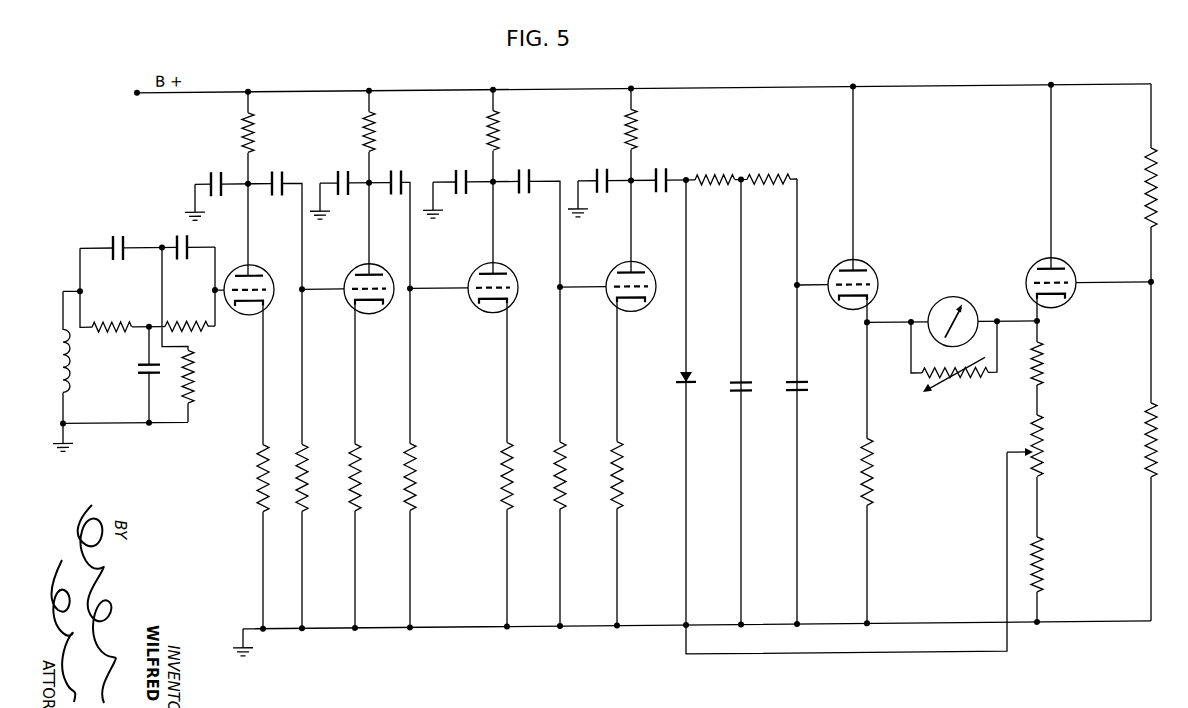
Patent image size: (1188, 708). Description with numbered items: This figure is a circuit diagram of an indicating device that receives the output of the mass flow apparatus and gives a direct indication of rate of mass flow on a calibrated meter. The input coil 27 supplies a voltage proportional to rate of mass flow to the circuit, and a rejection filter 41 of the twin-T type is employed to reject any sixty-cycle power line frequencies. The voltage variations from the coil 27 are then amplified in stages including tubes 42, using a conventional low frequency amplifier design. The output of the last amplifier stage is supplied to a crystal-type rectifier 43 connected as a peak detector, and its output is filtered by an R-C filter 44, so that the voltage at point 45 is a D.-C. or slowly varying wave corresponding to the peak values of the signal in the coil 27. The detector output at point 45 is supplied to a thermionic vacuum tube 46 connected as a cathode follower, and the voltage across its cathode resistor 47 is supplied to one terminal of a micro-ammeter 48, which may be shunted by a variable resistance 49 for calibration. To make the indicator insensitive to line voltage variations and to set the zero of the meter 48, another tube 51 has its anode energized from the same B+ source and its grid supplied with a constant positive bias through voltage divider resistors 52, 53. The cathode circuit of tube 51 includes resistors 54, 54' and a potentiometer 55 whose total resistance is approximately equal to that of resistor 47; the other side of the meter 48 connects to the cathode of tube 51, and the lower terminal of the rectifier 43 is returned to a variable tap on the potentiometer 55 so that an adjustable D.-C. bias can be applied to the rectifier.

The coil 27 is at (60, 346).
The rejection filter 41 is at (149, 228).
The tubes 42 is at (260, 252).
The rectifier 43 is at (684, 384).
The R-C filter 44 is at (756, 168).
The point 45 is at (801, 278).
The thermionic vacuum tube 46 is at (881, 262).
The cathode resistor 47 is at (876, 481).
The micro-ammeter 48 is at (971, 293).
The variable resistance 49 is at (958, 387).
The tube 51 is at (1071, 250).
The voltage divider resistor 52 is at (1147, 206).
The voltage divider resistor 53 is at (1147, 439).
The resistor 54 is at (1052, 364).
The potentiometer 55 is at (1044, 446).
The resistor 54' is at (1055, 564).